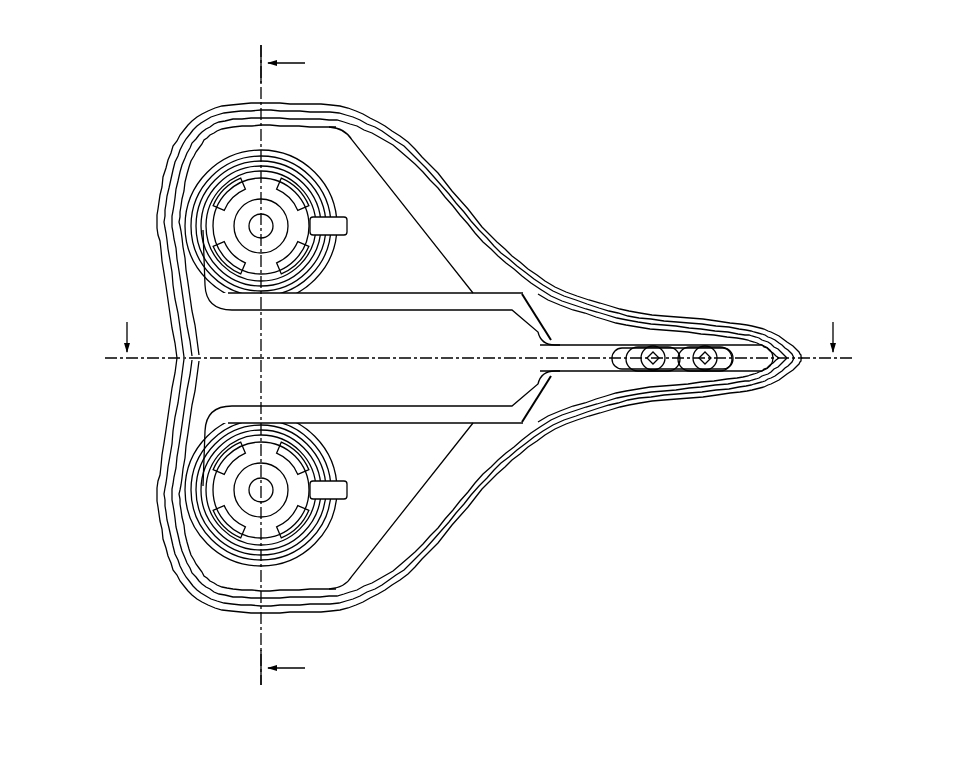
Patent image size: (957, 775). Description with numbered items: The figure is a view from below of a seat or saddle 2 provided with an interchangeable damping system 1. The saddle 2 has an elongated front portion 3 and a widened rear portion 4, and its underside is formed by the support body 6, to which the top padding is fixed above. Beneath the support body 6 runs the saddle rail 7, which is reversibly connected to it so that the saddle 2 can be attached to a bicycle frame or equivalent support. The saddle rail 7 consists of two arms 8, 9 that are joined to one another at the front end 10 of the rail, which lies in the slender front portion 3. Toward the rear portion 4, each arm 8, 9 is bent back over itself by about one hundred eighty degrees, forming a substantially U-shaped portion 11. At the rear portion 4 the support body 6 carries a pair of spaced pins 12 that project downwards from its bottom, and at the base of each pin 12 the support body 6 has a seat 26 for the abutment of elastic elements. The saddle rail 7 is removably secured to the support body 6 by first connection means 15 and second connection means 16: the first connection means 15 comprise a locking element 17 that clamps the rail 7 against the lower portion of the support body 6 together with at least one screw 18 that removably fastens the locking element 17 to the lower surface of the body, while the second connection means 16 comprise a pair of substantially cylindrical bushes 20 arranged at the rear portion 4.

The interchangeable damping system 1 is at (120, 268).
The seat or saddle 2 is at (630, 262).
The front portion 3 is at (625, 432).
The rear portion 4 is at (180, 103).
The support body 6 is at (435, 185).
The saddle rail 7 is at (413, 277).
The arm 8 is at (490, 265).
The arm 9 is at (437, 423).
The front end 10 is at (690, 347).
The U-shaped portion 11 is at (205, 262).
The pin 12 is at (225, 215).
The first connection means 15 is at (675, 420).
The second connection means 16 is at (158, 172).
The locking element 17 is at (707, 353).
The screw 18 is at (708, 372).
The bush 20 is at (340, 185).
The seat 26 is at (415, 202).